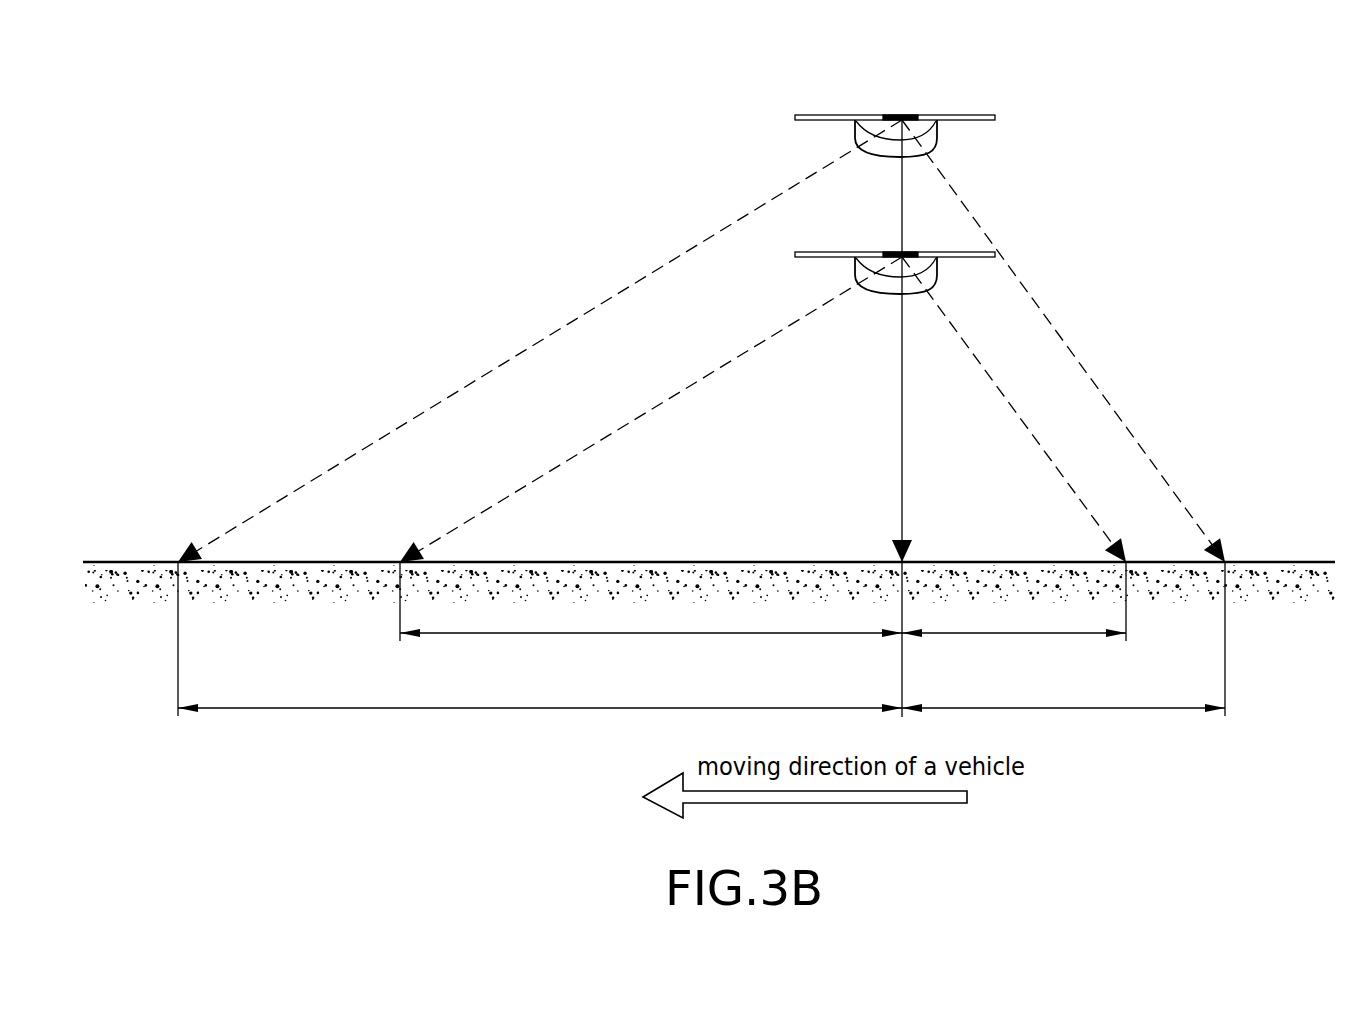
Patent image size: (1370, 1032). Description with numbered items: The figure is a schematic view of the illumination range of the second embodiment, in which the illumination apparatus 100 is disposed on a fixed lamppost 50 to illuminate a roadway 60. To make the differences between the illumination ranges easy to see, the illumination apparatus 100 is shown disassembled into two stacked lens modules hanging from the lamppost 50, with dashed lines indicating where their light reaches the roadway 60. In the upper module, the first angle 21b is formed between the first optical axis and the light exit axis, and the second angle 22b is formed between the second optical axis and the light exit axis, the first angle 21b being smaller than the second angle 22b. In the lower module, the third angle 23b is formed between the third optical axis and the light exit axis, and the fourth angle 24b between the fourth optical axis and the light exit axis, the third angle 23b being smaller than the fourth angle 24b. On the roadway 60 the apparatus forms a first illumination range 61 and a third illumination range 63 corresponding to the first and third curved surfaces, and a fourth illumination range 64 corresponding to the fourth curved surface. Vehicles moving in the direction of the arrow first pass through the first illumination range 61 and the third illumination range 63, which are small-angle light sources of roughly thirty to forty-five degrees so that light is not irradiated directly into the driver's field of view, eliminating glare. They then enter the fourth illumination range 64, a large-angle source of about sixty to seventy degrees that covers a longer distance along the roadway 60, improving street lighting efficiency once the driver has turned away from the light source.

The fixed lamppost 50 is at (979, 111).
The illumination apparatus 100 is at (935, 132).
The first angle 21b is at (912, 148).
The second angle 22b is at (880, 156).
The third angle 23b is at (912, 285).
The fourth angle 24b is at (880, 293).
The roadway 60 is at (1295, 560).
The first illumination range 61 is at (573, 708).
The third illumination range 63 is at (1015, 633).
The fourth illumination range 64 is at (673, 633).